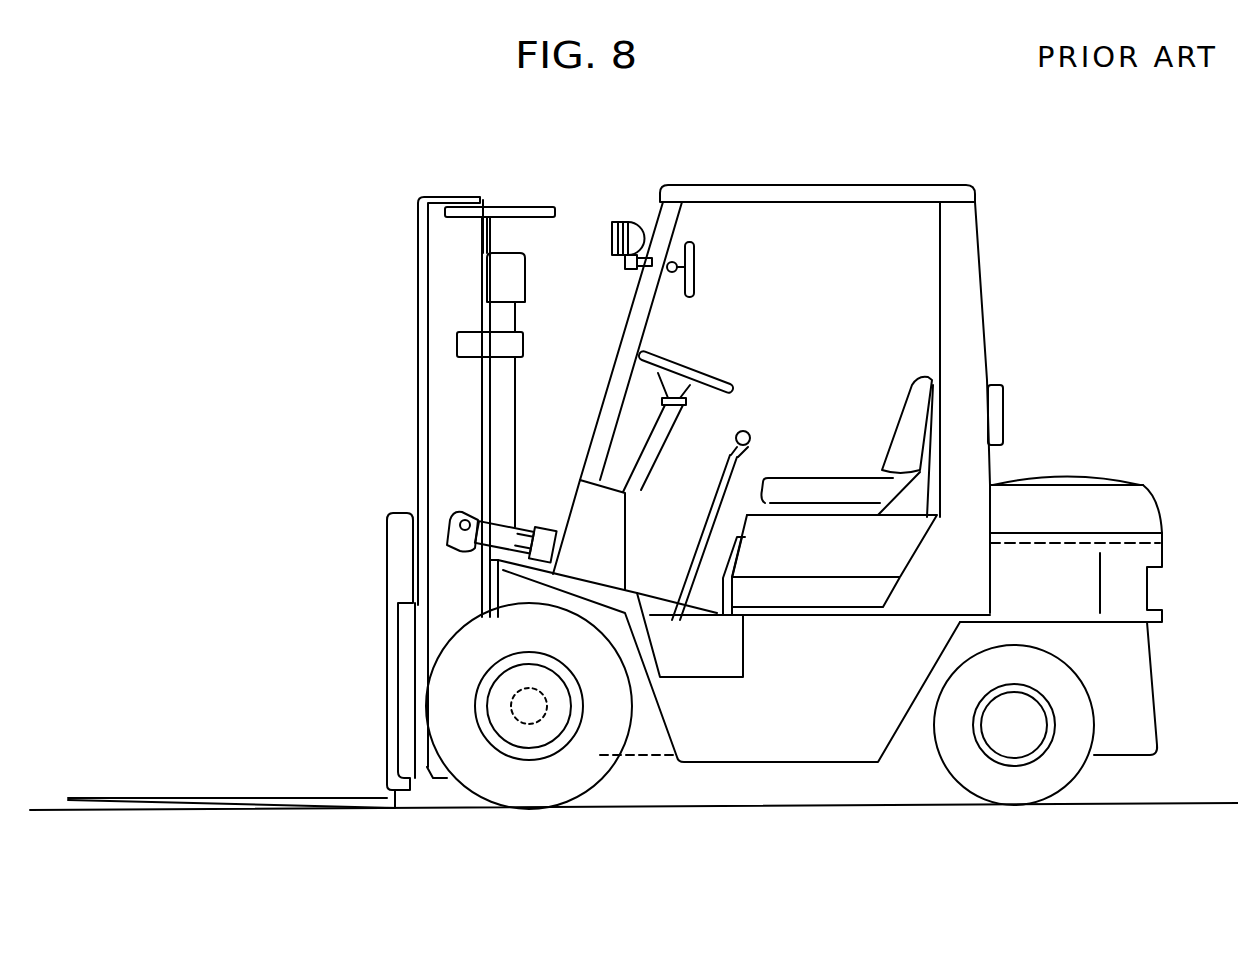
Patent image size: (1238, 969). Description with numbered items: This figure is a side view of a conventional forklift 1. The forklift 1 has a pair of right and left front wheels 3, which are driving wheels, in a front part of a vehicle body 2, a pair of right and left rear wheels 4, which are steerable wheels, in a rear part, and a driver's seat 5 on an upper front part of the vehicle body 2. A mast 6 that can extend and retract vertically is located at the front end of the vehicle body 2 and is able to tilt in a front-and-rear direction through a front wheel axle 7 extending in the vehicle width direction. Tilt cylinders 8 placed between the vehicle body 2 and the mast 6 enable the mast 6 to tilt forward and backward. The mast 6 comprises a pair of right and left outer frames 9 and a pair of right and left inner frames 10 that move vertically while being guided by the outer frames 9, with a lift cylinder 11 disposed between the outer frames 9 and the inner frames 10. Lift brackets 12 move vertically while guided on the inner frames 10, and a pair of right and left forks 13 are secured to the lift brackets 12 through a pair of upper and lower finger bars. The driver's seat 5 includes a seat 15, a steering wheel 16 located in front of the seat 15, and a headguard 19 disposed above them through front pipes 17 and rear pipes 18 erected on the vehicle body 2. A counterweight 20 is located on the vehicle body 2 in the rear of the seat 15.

The forklift 1 is at (1048, 380).
The vehicle body 2 is at (693, 760).
The front wheels 3 is at (525, 795).
The rear wheels 4 is at (1015, 793).
The driver's seat 5 is at (778, 250).
The mast 6 is at (416, 352).
The front wheel axle 7 is at (515, 706).
The tilt cylinders 8 is at (540, 540).
The outer frames 9 is at (438, 437).
The inner frames 10 is at (415, 470).
The lift cylinder 11 is at (505, 380).
The lift brackets 12 is at (410, 615).
The forks 13 is at (280, 797).
The seat 15 is at (860, 487).
The steering wheel 16 is at (722, 383).
The front pipes 17 is at (632, 312).
The rear pipes 18 is at (945, 315).
The headguard 19 is at (861, 186).
The counterweight 20 is at (1093, 510).